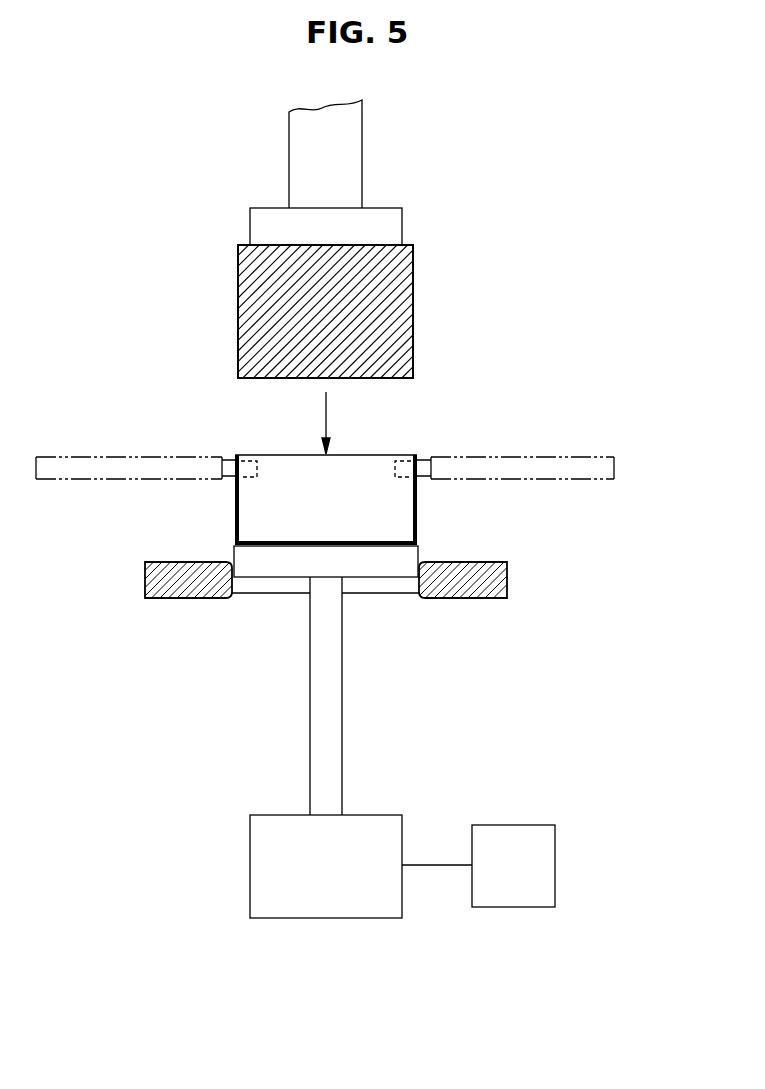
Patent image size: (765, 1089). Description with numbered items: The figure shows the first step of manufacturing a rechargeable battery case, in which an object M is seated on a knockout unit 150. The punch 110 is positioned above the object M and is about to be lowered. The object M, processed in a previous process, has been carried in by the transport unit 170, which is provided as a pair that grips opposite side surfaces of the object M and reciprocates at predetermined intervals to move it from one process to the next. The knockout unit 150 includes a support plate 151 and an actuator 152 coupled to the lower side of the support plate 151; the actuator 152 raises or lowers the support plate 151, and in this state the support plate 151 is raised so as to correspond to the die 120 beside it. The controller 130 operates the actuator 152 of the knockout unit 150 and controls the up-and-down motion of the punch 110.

The punch 110 is at (400, 310).
The object M is at (418, 513).
The transport unit 170 is at (598, 451).
The die 120 is at (139, 557).
The knockout unit 150 is at (396, 732).
The support plate 151 is at (368, 568).
The actuator 152 is at (386, 828).
The controller 130 is at (555, 865).